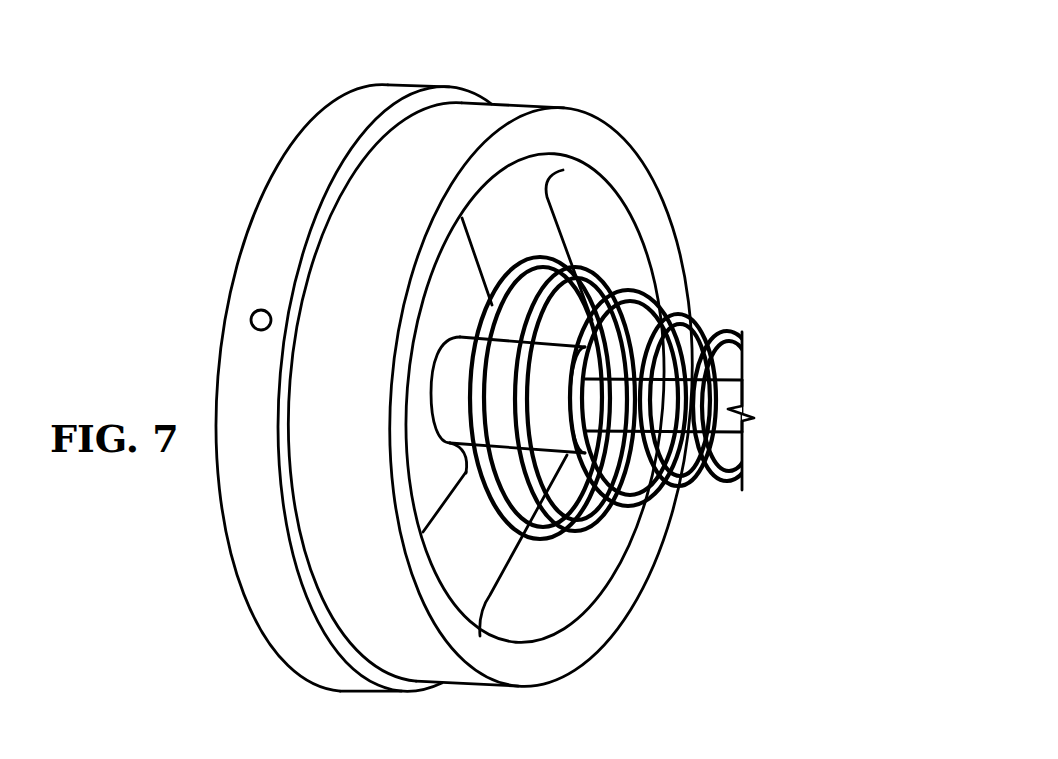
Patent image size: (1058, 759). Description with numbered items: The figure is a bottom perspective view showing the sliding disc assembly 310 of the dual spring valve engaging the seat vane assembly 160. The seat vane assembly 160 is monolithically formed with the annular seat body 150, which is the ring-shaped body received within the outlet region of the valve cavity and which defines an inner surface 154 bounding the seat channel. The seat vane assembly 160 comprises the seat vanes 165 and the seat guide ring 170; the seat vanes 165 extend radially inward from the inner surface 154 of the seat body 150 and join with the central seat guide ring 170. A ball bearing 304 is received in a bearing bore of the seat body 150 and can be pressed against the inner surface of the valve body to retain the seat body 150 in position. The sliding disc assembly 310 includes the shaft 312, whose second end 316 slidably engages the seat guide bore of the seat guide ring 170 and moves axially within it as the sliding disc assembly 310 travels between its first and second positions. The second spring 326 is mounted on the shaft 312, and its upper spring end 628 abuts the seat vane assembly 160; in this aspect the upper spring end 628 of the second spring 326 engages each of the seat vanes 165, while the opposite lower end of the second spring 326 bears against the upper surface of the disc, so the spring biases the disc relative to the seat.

The annular seat body 150 is at (253, 545).
The inner surface 154 is at (550, 601).
The seat vane assembly 160 is at (597, 223).
The seat vanes 165 is at (516, 198).
The seat guide ring 170 is at (446, 422).
The ball bearing 304 is at (248, 315).
The sliding disc assembly 310 is at (510, 385).
The shaft 312 is at (614, 420).
The second end 316 is at (605, 398).
The second spring 326 is at (603, 517).
The upper spring end 628 is at (483, 337).